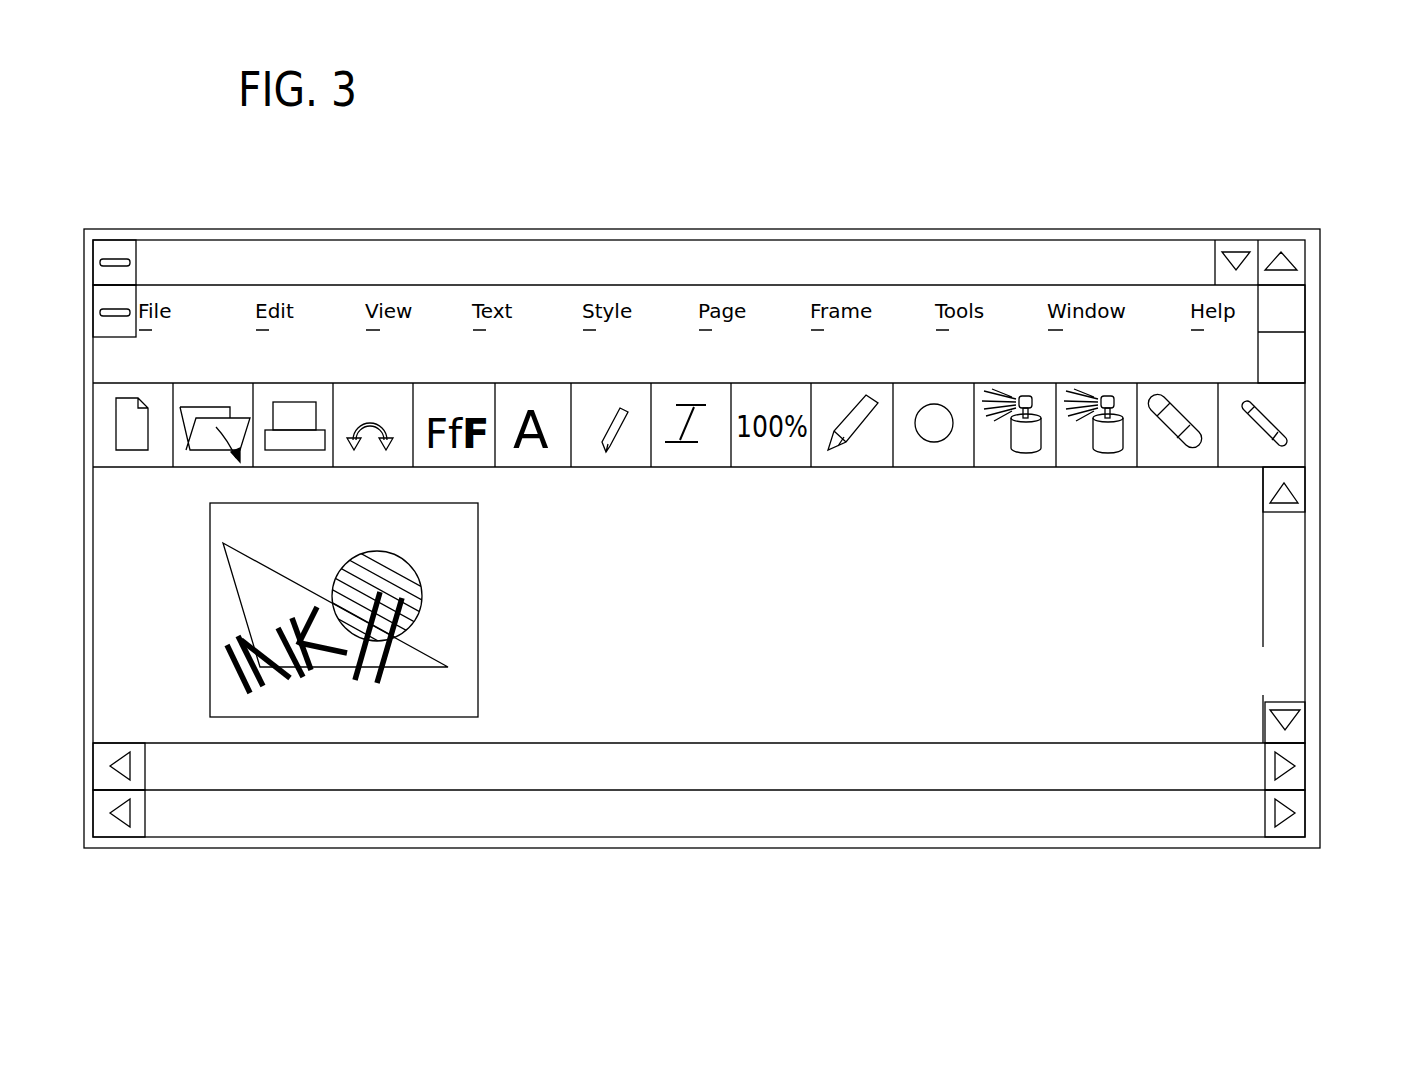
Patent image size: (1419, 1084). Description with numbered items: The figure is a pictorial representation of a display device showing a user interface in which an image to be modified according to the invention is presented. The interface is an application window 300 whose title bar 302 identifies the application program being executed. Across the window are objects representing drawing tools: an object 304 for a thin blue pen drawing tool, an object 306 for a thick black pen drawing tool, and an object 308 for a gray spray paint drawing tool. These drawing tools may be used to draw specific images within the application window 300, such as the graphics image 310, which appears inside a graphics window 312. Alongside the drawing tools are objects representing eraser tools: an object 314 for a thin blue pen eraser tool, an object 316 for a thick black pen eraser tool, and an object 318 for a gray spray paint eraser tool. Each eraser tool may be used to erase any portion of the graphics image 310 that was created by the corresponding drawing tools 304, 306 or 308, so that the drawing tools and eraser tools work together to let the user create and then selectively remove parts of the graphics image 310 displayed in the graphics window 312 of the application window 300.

The application window 300 is at (1230, 208).
The title bar 302 is at (815, 250).
The thin blue pen drawing tool object 304 is at (613, 393).
The thick black pen drawing tool object 306 is at (847, 393).
The gray spray paint drawing tool object 308 is at (997, 387).
The graphics image 310 is at (308, 725).
The graphics window 312 is at (1015, 600).
The thin blue pen eraser tool object 314 is at (1275, 398).
The thick black pen eraser tool object 316 is at (1192, 398).
The gray spray paint eraser tool object 318 is at (1120, 387).